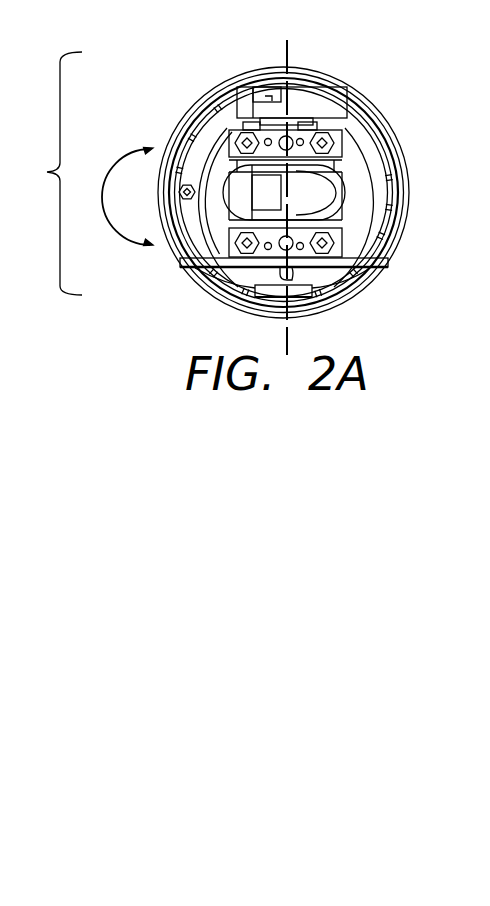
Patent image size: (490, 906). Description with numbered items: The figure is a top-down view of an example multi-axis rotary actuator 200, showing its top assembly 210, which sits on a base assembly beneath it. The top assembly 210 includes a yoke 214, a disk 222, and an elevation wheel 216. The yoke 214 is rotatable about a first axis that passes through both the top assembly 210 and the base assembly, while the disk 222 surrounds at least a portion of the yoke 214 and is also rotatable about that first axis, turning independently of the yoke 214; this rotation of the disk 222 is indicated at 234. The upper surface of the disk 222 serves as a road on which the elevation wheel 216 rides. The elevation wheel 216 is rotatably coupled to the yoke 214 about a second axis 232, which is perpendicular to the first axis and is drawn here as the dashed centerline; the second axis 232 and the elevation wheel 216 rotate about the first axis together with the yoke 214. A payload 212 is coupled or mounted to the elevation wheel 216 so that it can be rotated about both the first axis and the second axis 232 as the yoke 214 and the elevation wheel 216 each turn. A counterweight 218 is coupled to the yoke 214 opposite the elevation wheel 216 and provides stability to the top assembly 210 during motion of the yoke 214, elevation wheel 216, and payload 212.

The multi-axis rotary actuator 200 is at (181, 80).
The top assembly 210 is at (41, 173).
The payload 212 is at (323, 193).
The yoke 214 is at (342, 132).
The elevation wheel 216 is at (382, 270).
The counterweight 218 is at (348, 88).
The disk 222 is at (371, 218).
The second axis 232 is at (287, 64).
The rotation of the disk about the first axis 234 is at (121, 159).